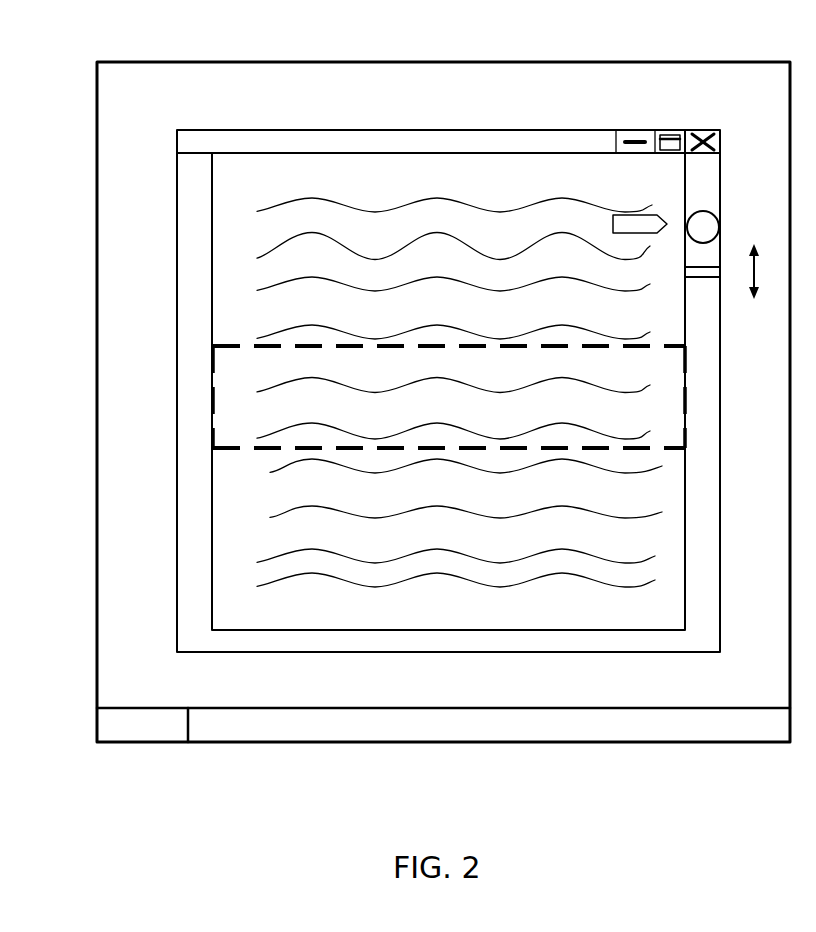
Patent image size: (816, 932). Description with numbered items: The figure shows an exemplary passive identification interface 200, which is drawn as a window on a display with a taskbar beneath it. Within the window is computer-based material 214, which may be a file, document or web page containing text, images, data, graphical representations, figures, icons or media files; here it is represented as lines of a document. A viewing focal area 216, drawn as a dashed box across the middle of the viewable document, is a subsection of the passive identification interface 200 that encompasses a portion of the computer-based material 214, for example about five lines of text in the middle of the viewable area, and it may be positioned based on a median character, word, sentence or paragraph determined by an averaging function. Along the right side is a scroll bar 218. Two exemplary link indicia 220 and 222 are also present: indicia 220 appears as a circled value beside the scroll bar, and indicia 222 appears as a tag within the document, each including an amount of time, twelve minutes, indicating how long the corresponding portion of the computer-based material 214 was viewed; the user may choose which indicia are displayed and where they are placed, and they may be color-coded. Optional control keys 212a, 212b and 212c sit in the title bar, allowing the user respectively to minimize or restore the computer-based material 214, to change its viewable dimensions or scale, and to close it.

The passive identification interface 200 is at (765, 806).
The control key 212a is at (622, 130).
The control key 212b is at (667, 130).
The control key 212c is at (706, 130).
The computer-based material 214 is at (236, 515).
The viewing focal area 216 is at (236, 404).
The scroll bar 218 is at (705, 279).
The indicia 220 is at (703, 211).
The indicia 222 is at (614, 223).